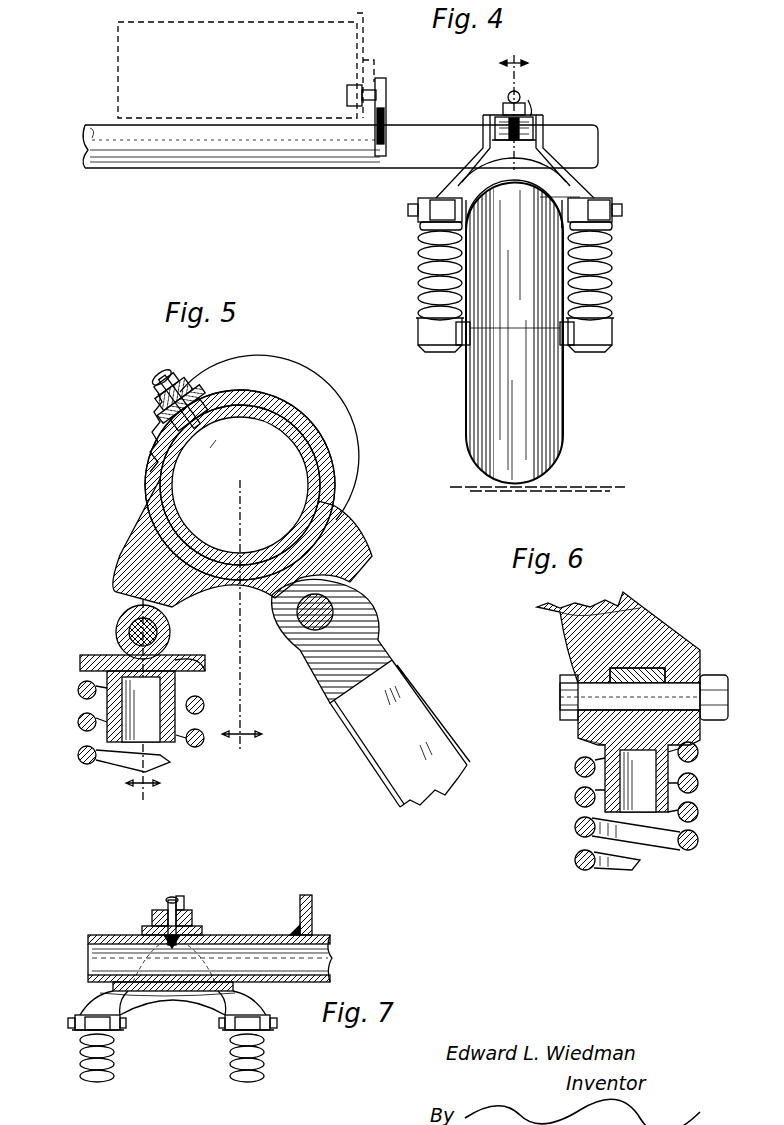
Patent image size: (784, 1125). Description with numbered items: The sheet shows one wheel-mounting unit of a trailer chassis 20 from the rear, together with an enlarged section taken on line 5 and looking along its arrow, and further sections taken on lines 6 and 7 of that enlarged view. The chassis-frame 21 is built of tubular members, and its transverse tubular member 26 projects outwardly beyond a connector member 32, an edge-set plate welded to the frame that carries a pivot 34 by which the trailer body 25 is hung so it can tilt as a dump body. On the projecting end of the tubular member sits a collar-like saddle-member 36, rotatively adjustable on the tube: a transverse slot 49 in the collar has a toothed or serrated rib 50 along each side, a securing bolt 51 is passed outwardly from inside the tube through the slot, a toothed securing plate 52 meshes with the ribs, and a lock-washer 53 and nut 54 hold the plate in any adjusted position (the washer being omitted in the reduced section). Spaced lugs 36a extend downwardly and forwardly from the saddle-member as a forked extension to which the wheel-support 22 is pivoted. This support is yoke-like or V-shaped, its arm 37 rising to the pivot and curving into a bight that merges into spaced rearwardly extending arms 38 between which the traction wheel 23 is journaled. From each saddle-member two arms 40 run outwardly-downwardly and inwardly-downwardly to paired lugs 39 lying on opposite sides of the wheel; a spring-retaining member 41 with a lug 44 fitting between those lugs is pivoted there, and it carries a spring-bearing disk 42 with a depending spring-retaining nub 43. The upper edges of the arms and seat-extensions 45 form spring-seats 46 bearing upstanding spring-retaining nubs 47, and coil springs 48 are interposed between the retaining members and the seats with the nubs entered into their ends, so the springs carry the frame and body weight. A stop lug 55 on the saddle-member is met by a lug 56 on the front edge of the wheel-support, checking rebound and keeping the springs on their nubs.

In FIG. 4, the section line 5— 5 is at (652, 262).
In FIG. 5, the section line 6— 6 is at (120, 500).
In FIG. 5, the section line 7— 7 is at (150, 355).
In FIG. 4, the chassis 20 is at (596, 178).
In FIG. 7, the chassis 20 is at (175, 1005).
In FIG. 4, the chassis-frame 21 is at (268, 168).
In FIG. 5, the chassis-frame 21 is at (320, 435).
In FIG. 7, the chassis-frame 21 is at (322, 950).
In FIG. 4, the wheel-support 22 is at (462, 172).
In FIG. 5, the wheel-support 22 is at (388, 650).
In FIG. 6, the wheel-support 22 is at (690, 648).
In FIG. 7, the wheel-support 22 is at (262, 1003).
In FIG. 4, the traction wheel 23 is at (552, 382).
In FIG. 4, the trailer body 25 is at (366, 38).
In FIG. 4, the transverse tubular member 26 is at (178, 150).
In FIG. 5, the transverse tubular member 26 is at (306, 492).
In FIG. 7, the transverse tubular member 26 is at (240, 938).
In FIG. 4, the connector member 32 is at (390, 118).
In FIG. 7, the connector member 32 is at (301, 915).
In FIG. 4, the pivot 34 is at (349, 88).
In FIG. 4, the saddle-member 36 is at (545, 125).
In FIG. 5, the saddle-member 36 is at (338, 466).
In FIG. 6, the saddle-member 36 is at (628, 620).
In FIG. 7, the saddle-member 36 is at (200, 935).
In FIG. 5, the lugs 36a is at (283, 615).
In FIG. 5, the arm 37 is at (428, 730).
In FIG. 4, the rearwardly extending arms 38 is at (462, 345).
In FIG. 4, the lugs 39 is at (420, 215).
In FIG. 5, the lugs 39 is at (118, 605).
In FIG. 6, the lugs 39 is at (578, 722).
In FIG. 7, the lugs 39 is at (85, 1015).
In FIG. 4, the arms 40 is at (466, 165).
In FIG. 5, the arms 40 is at (135, 565).
In FIG. 6, the arms 40 is at (560, 610).
In FIG. 7, the arms 40 is at (102, 990).
In FIG. 4, the spring-retaining member 41 is at (430, 232).
In FIG. 5, the spring-retaining member 41 is at (112, 655).
In FIG. 6, the spring-retaining member 41 is at (578, 740).
In FIG. 7, the spring-retaining member 41 is at (80, 1040).
In FIG. 4, the spring-bearing disk 42 is at (472, 230).
In FIG. 5, the spring-bearing disk 42 is at (195, 656).
In FIG. 6, the spring-bearing disk 42 is at (595, 748).
In FIG. 7, the spring-bearing disk 42 is at (72, 1030).
In FIG. 4, the spring-retaining nub 43 is at (466, 240).
In FIG. 5, the spring-retaining nub 43 is at (122, 700).
In FIG. 6, the spring-retaining nub 43 is at (648, 793).
In FIG. 7, the spring-retaining nub 43 is at (115, 1050).
In FIG. 4, the lug 44 is at (412, 200).
In FIG. 5, the lug 44 is at (175, 632).
In FIG. 6, the lug 44 is at (668, 675).
In FIG. 7, the lug 44 is at (72, 1012).
In FIG. 4, the seat-extension 45 is at (432, 340).
In FIG. 4, the spring-seat 46 is at (420, 318).
In FIG. 4, the spring-retaining nub 47 is at (472, 322).
In FIG. 4, the coil spring 48 is at (420, 280).
In FIG. 5, the coil spring 48 is at (206, 706).
In FIG. 6, the coil spring 48 is at (700, 840).
In FIG. 7, the coil spring 48 is at (88, 1078).
In FIG. 4, the slot 49 is at (514, 142).
In FIG. 7, the slot 49 is at (140, 928).
In FIG. 4, the toothed or serrated rib 50 is at (500, 132).
In FIG. 7, the toothed or serrated rib 50 is at (158, 926).
In FIG. 4, the securing bolt 51 is at (518, 102).
In FIG. 7, the securing bolt 51 is at (172, 940).
In FIG. 4, the securing plate 52 is at (538, 108).
In FIG. 7, the securing plate 52 is at (180, 900).
In FIG. 4, the lock-washer 53 is at (503, 104).
In FIG. 4, the nut 54 is at (508, 94).
In FIG. 7, the nut 54 is at (165, 898).
In FIG. 5, the stop lug 55 is at (350, 560).
In FIG. 5, the lug 56 is at (375, 590).